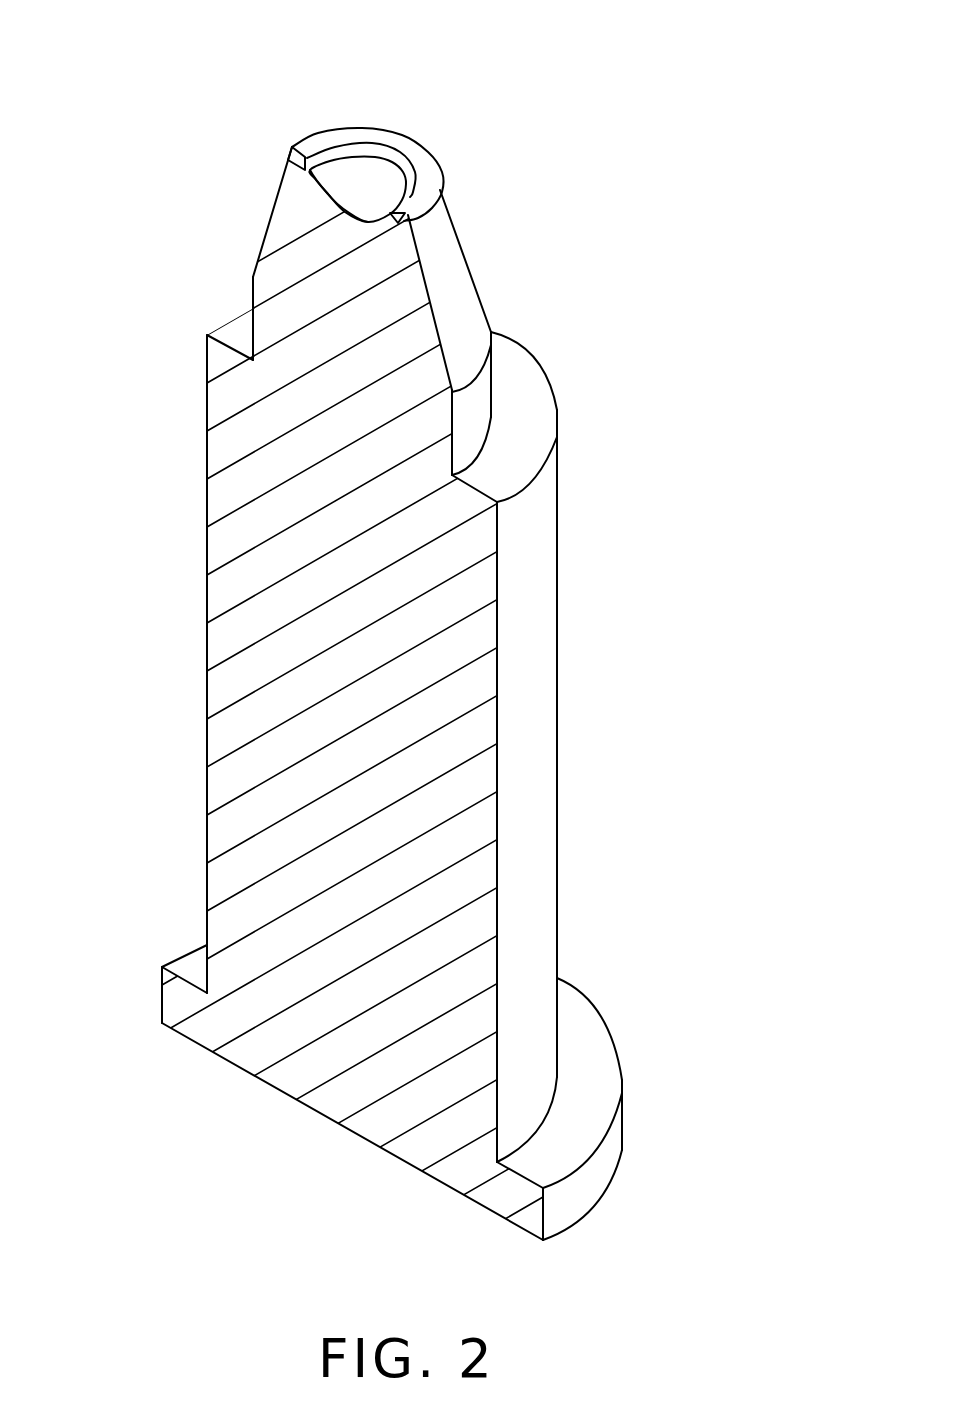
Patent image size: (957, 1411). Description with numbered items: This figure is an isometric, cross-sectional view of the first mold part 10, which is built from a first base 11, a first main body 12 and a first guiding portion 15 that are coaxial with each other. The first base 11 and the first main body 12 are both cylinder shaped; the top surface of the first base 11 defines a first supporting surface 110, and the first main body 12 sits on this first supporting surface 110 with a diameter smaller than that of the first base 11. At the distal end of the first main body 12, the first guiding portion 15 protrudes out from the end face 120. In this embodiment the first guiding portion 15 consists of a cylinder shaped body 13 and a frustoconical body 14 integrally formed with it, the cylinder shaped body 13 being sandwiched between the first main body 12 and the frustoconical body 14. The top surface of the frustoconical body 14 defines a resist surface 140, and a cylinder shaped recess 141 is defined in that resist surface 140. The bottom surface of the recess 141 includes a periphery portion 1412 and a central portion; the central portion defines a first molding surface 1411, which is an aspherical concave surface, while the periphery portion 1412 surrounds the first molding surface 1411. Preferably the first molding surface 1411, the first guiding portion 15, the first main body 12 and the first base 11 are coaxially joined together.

The first mold part 10 is at (403, 100).
The first base 11 is at (512, 1190).
The first supporting surface 110 is at (582, 1068).
The first main body 12 is at (250, 628).
The end face 120 is at (518, 447).
The cylinder shaped body 13 is at (472, 415).
The frustoconical body 14 is at (452, 270).
The resist surface 140 is at (425, 173).
The cylinder shaped recess 141 is at (353, 183).
The first molding surface 1411 is at (330, 200).
The periphery portion 1412 is at (313, 172).
The first guiding portion 15 is at (643, 200).